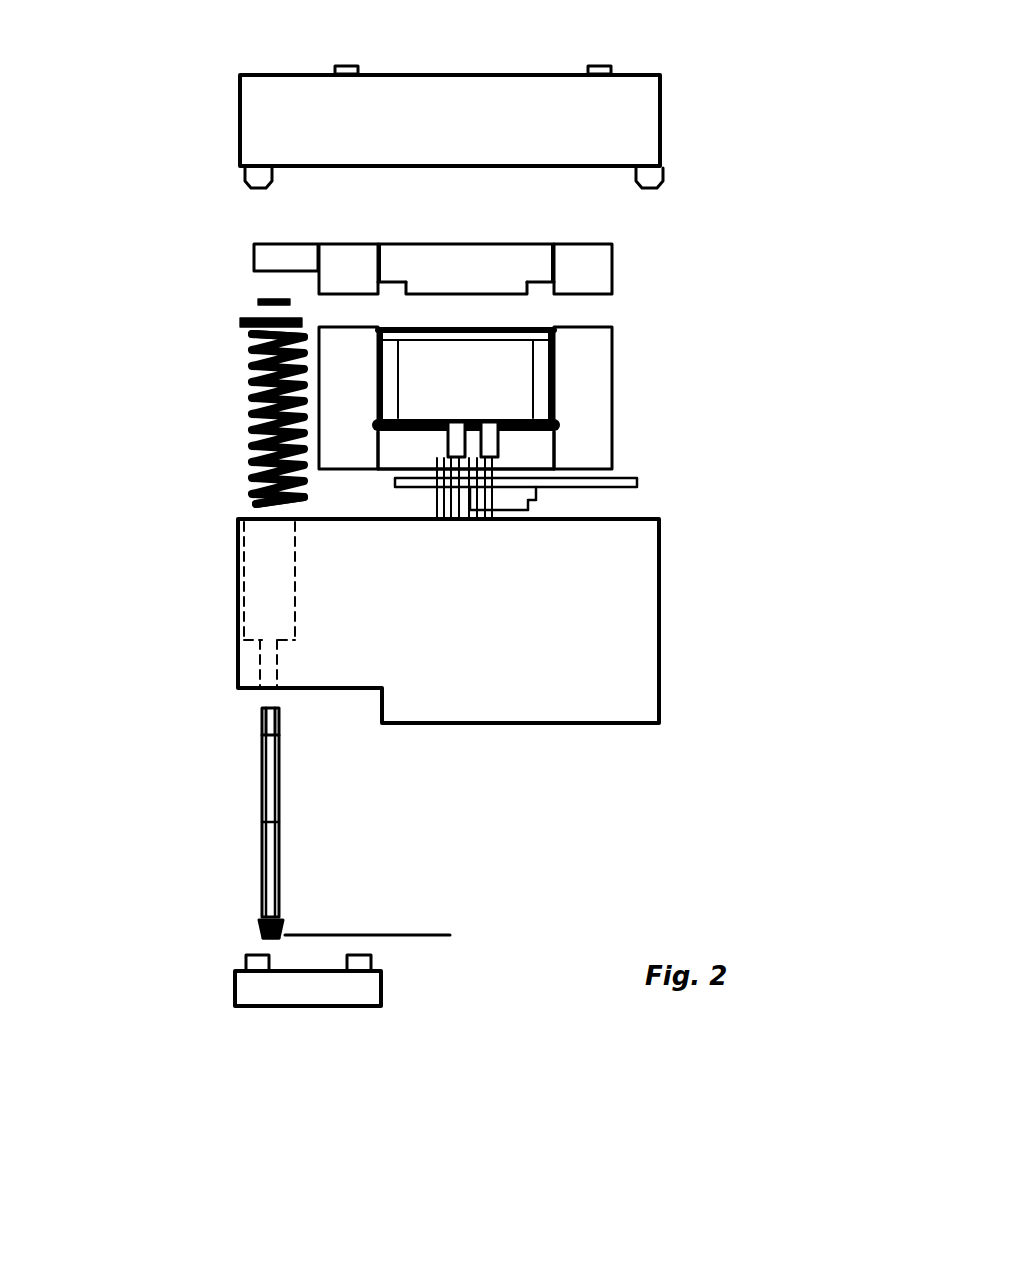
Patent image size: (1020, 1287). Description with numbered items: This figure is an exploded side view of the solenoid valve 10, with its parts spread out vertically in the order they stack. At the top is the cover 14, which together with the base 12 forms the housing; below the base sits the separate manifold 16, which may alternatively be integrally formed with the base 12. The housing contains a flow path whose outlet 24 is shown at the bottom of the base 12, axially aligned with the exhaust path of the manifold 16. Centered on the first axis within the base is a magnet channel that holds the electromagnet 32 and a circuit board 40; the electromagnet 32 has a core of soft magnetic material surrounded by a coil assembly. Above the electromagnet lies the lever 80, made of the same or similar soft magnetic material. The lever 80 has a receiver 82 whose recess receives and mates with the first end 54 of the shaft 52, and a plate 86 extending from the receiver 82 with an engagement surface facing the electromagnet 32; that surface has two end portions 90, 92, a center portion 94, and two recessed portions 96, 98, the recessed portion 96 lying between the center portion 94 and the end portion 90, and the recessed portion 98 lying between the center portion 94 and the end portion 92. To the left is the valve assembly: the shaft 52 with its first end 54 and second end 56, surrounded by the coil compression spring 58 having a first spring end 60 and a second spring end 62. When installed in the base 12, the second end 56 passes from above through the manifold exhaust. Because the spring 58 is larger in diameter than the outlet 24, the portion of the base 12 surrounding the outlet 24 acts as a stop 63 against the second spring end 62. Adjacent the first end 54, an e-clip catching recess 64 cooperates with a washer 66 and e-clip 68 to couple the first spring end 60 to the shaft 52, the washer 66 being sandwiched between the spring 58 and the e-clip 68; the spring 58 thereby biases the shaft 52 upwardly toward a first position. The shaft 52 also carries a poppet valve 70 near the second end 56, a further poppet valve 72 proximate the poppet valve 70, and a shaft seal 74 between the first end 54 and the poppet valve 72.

The solenoid valve 10 is at (625, 745).
The base 12 is at (543, 678).
The cover 14 is at (215, 75).
The manifold 16 is at (400, 1043).
The outlet 24 is at (277, 688).
The electromagnet 32 is at (510, 380).
The circuit board 40 is at (645, 483).
The shaft 52 is at (263, 814).
The first end 54 is at (262, 710).
The second end 56 is at (388, 937).
The coil compression spring 58 is at (178, 419).
The first spring end 60 is at (250, 345).
The second spring end 62 is at (250, 500).
The stop 63 is at (295, 640).
The e-clip catching recess 64 is at (262, 732).
The washer 66 is at (242, 330).
The e-clip 68 is at (258, 302).
The poppet valve 70 is at (265, 930).
The poppet valve 72 is at (283, 920).
The shaft seal 74 is at (262, 818).
The lever 80 is at (421, 217).
The receiver 82 is at (275, 238).
The plate 86 is at (575, 404).
The end portion 90 is at (608, 256).
The end portion 92 is at (345, 258).
The center portion 94 is at (483, 293).
The recessed portion 96 is at (540, 275).
The recessed portion 98 is at (390, 275).